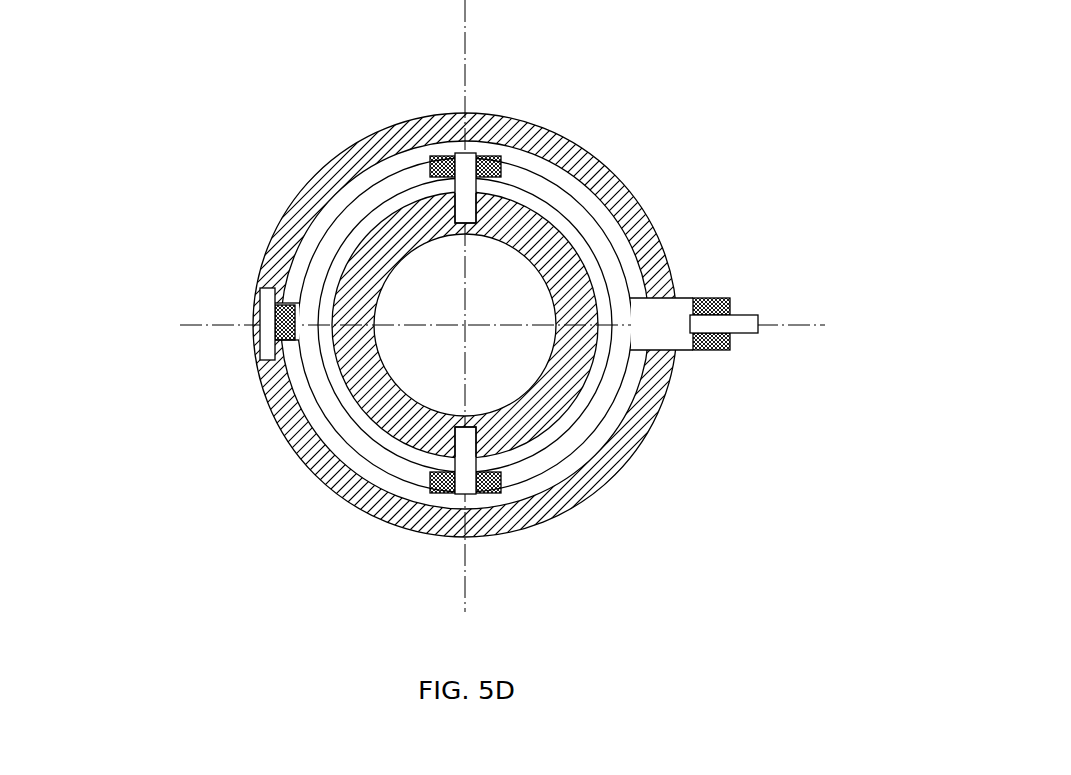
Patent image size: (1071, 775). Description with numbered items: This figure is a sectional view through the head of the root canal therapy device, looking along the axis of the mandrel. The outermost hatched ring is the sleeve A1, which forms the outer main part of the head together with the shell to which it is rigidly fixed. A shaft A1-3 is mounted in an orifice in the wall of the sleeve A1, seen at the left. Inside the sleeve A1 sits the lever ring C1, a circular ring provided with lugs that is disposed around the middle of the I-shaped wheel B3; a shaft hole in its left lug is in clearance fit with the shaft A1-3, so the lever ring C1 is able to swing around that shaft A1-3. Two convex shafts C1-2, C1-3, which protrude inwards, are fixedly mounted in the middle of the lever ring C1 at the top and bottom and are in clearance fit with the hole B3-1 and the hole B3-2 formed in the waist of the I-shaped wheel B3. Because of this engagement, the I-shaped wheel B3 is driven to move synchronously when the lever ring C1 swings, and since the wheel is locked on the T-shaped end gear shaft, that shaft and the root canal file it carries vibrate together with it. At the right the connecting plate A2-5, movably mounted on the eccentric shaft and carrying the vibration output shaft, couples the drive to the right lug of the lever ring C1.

The sleeve A1 is at (333, 480).
The shaft A1-3 is at (268, 312).
The connecting plate A2-5 is at (712, 324).
The I-shaped wheel B3 is at (529, 241).
The hole B3-1 is at (462, 228).
The hole B3-2 is at (475, 425).
The lever ring C1 is at (318, 389).
The convex shaft C1-2 is at (468, 176).
The convex shaft C1-3 is at (465, 470).